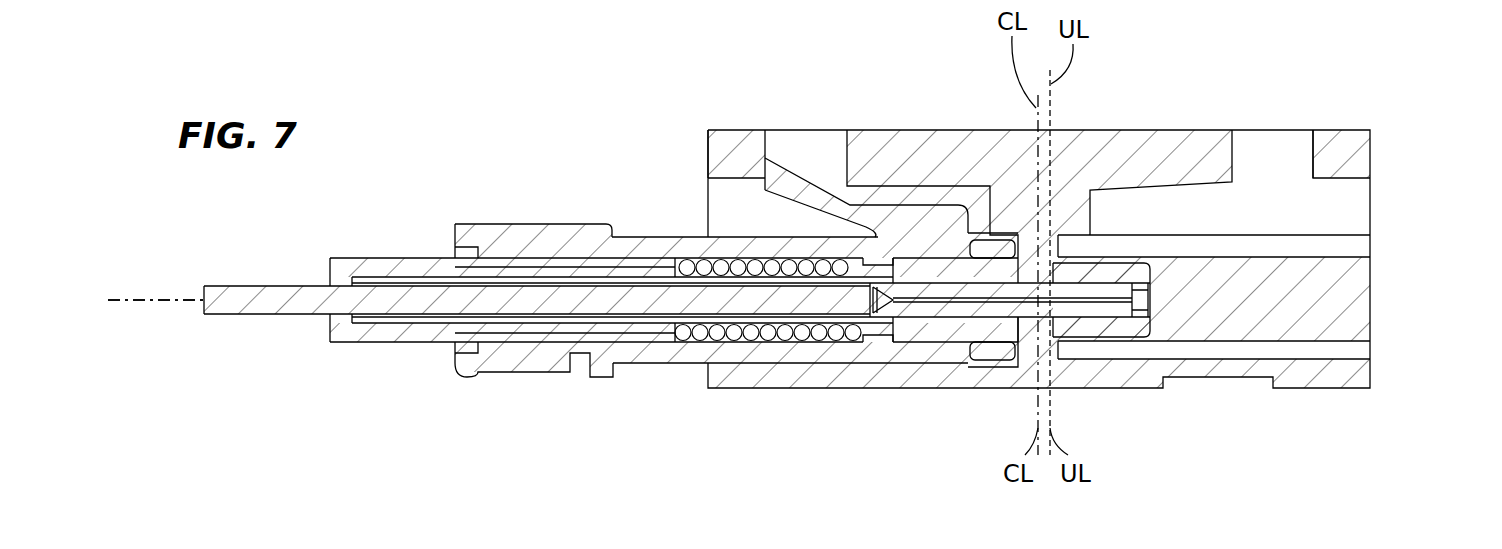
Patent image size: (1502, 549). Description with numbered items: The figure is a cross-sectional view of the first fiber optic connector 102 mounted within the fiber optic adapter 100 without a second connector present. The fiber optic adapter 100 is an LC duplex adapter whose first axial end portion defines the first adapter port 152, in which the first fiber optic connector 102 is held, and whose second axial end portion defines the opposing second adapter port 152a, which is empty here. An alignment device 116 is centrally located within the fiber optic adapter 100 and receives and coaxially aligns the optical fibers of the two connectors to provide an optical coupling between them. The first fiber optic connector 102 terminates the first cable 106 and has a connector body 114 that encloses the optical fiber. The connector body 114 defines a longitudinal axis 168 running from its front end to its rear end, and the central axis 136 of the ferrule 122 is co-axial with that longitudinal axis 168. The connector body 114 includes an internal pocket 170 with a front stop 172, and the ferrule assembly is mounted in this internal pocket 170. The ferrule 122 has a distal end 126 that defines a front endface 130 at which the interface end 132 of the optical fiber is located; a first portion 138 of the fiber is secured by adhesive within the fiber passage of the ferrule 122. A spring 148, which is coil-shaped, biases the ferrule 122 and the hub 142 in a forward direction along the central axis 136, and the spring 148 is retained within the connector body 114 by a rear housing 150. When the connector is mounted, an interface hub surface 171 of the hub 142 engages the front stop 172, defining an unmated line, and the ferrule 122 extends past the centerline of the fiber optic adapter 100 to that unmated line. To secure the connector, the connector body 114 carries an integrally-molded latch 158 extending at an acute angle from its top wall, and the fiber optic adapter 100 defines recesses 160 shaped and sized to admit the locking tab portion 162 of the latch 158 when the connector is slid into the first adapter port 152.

The fiber optic adapter 100 is at (789, 241).
The first fiber optic connector 102 is at (740, 318).
The first cable 106 is at (258, 295).
The connector body 114 is at (518, 230).
The alignment device 116 is at (1137, 267).
The ferrule 122 is at (962, 308).
The distal end 126 is at (1072, 301).
The front endface 130 is at (1052, 303).
The interface end 132 is at (1052, 300).
The central axis 136 is at (152, 302).
The longitudinal axis 168 is at (187, 339).
The first portion 138 is at (1007, 302).
The hub 142 is at (878, 327).
The spring 148 is at (758, 333).
The rear housing 150 is at (391, 337).
The first adapter port 152 is at (723, 202).
The second adapter port 152a is at (1357, 264).
The latch 158 is at (819, 180).
The recesses 160 is at (795, 135).
The locking tab portion 162 is at (770, 168).
The internal pocket 170 is at (922, 268).
The interface hub surface 171 is at (903, 338).
The front stop 172 is at (901, 262).